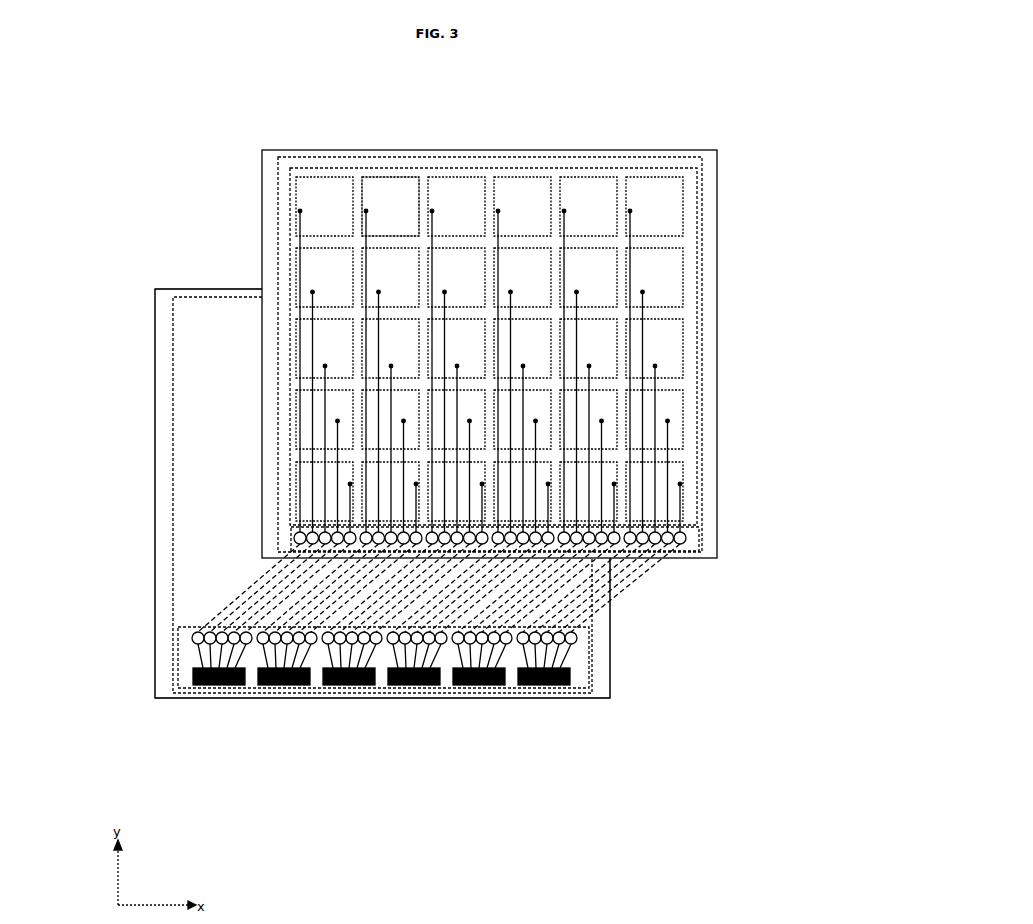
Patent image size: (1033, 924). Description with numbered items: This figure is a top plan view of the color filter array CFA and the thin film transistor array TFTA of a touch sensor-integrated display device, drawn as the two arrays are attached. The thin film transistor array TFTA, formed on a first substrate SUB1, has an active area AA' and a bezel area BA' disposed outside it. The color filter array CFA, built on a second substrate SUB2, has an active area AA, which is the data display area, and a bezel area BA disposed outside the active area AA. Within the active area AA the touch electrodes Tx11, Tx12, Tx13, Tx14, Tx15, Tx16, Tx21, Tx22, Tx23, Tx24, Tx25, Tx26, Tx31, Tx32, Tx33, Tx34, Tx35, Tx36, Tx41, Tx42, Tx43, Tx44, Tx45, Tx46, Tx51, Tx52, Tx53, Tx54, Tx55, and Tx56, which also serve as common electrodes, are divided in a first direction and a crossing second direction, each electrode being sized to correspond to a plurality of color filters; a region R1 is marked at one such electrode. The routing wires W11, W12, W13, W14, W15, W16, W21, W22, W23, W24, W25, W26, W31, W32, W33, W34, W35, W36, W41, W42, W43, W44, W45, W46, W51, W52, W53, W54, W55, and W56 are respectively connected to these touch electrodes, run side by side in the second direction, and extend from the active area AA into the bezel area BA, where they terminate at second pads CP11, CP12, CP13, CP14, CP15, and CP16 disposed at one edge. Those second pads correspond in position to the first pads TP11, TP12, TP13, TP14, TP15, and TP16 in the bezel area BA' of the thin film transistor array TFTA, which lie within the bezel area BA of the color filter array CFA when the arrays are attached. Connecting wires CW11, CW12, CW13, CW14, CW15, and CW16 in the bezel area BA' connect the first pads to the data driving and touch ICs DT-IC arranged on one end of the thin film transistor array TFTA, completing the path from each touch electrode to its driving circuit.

The thin film transistor array TFTA is at (161, 273).
The first substrate SUB1 is at (160, 323).
The active area of the thin film transistor array AA' is at (349, 495).
The bezel area of the thin film transistor array BA' is at (347, 657).
The color filter array CFA is at (356, 126).
The second substrate SUB2 is at (500, 152).
The active area of the color filter array AA is at (493, 313).
The bezel area of the color filter array BA is at (521, 523).
The region R1 is at (384, 174).
The touch electrode Tx11 is at (324, 206).
The touch electrode Tx12 is at (390, 206).
The touch electrode Tx13 is at (456, 206).
The touch electrode Tx14 is at (522, 206).
The touch electrode Tx15 is at (588, 206).
The touch electrode Tx16 is at (654, 206).
The touch electrode Tx21 is at (324, 277).
The touch electrode Tx22 is at (390, 277).
The touch electrode Tx23 is at (456, 277).
The touch electrode Tx24 is at (522, 277).
The touch electrode Tx25 is at (588, 277).
The touch electrode Tx26 is at (654, 277).
The touch electrode Tx31 is at (324, 348).
The touch electrode Tx32 is at (390, 348).
The touch electrode Tx33 is at (456, 348).
The touch electrode Tx34 is at (522, 348).
The touch electrode Tx35 is at (588, 348).
The touch electrode Tx36 is at (654, 348).
The touch electrode Tx41 is at (324, 419).
The touch electrode Tx42 is at (390, 419).
The touch electrode Tx43 is at (456, 419).
The touch electrode Tx44 is at (522, 419).
The touch electrode Tx45 is at (588, 419).
The touch electrode Tx46 is at (654, 419).
The touch electrode Tx51 is at (324, 491).
The touch electrode Tx52 is at (390, 491).
The touch electrode Tx53 is at (456, 491).
The touch electrode Tx54 is at (522, 491).
The touch electrode Tx55 is at (588, 491).
The touch electrode Tx56 is at (654, 491).
The routing wire W11 is at (300, 211).
The routing wire W12 is at (366, 211).
The routing wire W13 is at (432, 211).
The routing wire W14 is at (498, 211).
The routing wire W15 is at (564, 211).
The routing wire W16 is at (630, 211).
The routing wire W21 is at (324, 414).
The routing wire W22 is at (390, 414).
The routing wire W23 is at (456, 414).
The routing wire W24 is at (522, 414).
The routing wire W25 is at (588, 414).
The routing wire W26 is at (654, 414).
The routing wire W31 is at (327, 446).
The routing wire W32 is at (393, 446).
The routing wire W33 is at (459, 446).
The routing wire W34 is at (525, 446).
The routing wire W35 is at (591, 446).
The routing wire W36 is at (657, 446).
The routing wire W41 is at (338, 421).
The routing wire W42 is at (404, 421).
The routing wire W43 is at (470, 421).
The routing wire W44 is at (536, 421).
The routing wire W45 is at (602, 421).
The routing wire W46 is at (668, 421).
The routing wire W51 is at (350, 484).
The routing wire W52 is at (416, 484).
The routing wire W53 is at (482, 484).
The routing wire W54 is at (548, 484).
The routing wire W55 is at (614, 484).
The routing wire W56 is at (680, 484).
The second pad CP11 is at (293, 538).
The second pad CP12 is at (376, 548).
The second pad CP13 is at (445, 551).
The second pad CP14 is at (545, 551).
The second pad CP15 is at (612, 548).
The second pad CP16 is at (688, 540).
The first pad TP11 is at (195, 645).
The first pad TP12 is at (259, 647).
The first pad TP13 is at (326, 647).
The first pad TP14 is at (394, 647).
The first pad TP15 is at (507, 647).
The first pad TP16 is at (576, 647).
The connecting wire CW11 is at (186, 662).
The connecting wire CW12 is at (265, 662).
The connecting wire CW13 is at (345, 662).
The connecting wire CW14 is at (440, 662).
The connecting wire CW15 is at (503, 662).
The connecting wire CW16 is at (574, 662).
The data driving and touch IC DT-IC is at (556, 686).